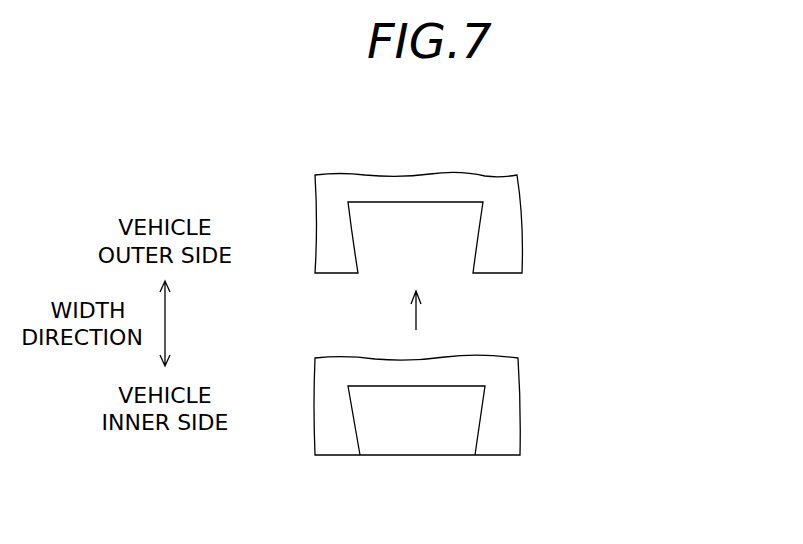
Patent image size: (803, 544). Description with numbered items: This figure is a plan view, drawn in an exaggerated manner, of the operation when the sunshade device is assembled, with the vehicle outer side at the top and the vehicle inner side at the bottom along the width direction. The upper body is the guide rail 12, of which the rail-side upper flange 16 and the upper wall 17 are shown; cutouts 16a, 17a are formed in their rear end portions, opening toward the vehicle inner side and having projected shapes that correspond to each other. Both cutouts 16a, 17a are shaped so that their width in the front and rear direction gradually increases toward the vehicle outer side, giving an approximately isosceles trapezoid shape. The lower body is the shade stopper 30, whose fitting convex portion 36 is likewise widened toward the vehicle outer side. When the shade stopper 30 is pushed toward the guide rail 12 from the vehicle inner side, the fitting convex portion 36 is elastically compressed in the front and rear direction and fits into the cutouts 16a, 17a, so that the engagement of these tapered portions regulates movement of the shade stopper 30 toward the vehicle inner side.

The guide rail 12 is at (452, 240).
The rail-side upper flange 16 is at (458, 219).
The upper wall 17 is at (458, 219).
The cutout 16a is at (420, 203).
The cutout 17a is at (482, 216).
The shade stopper 30 is at (444, 445).
The fitting convex portion 36 is at (465, 415).